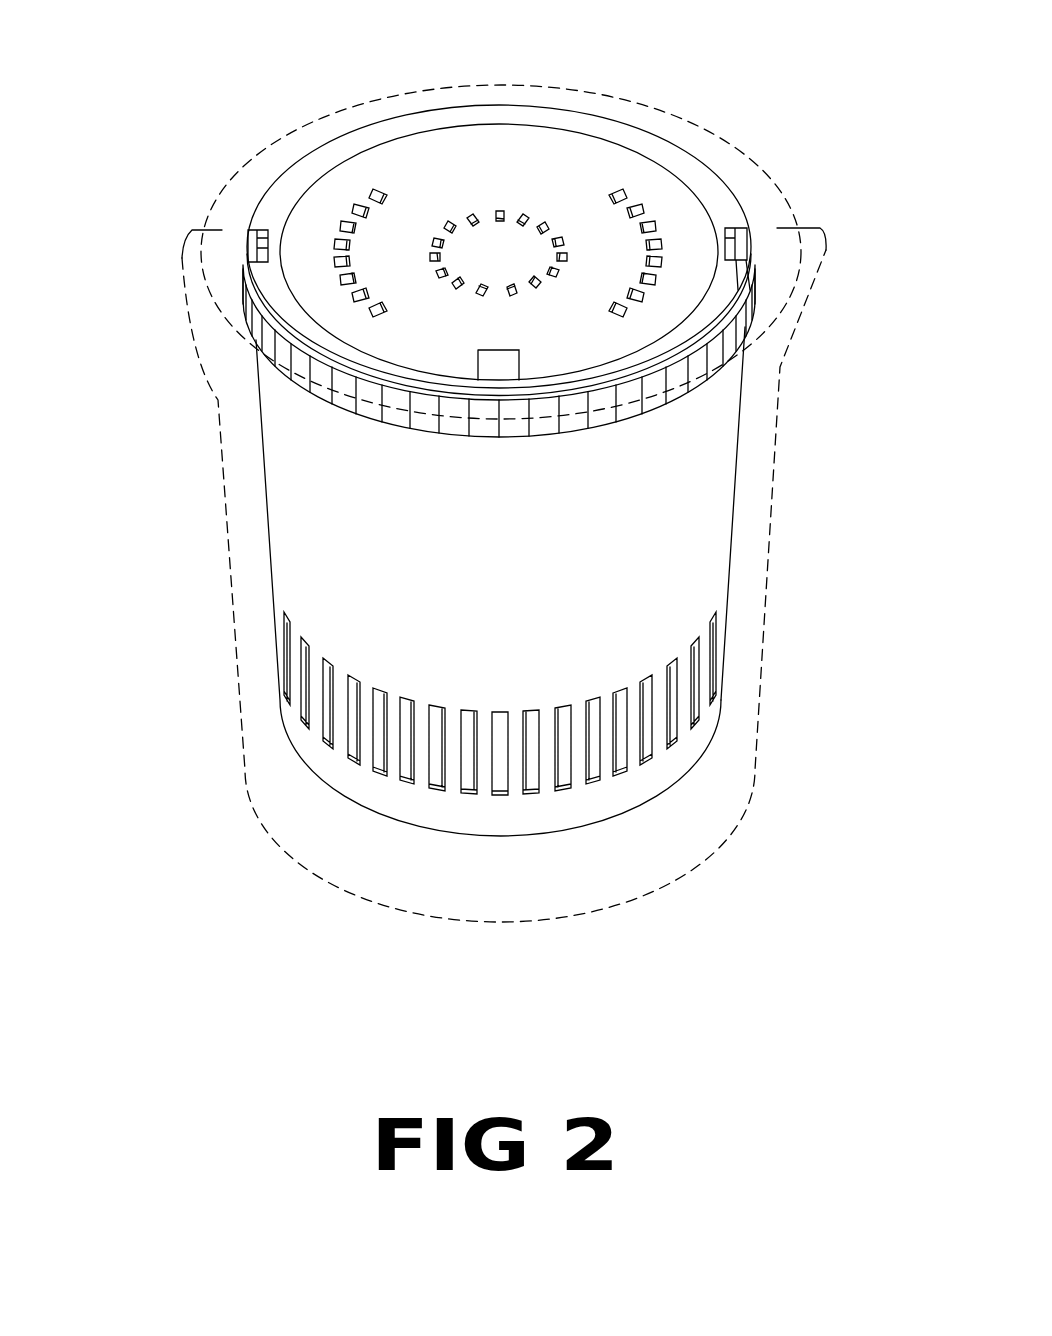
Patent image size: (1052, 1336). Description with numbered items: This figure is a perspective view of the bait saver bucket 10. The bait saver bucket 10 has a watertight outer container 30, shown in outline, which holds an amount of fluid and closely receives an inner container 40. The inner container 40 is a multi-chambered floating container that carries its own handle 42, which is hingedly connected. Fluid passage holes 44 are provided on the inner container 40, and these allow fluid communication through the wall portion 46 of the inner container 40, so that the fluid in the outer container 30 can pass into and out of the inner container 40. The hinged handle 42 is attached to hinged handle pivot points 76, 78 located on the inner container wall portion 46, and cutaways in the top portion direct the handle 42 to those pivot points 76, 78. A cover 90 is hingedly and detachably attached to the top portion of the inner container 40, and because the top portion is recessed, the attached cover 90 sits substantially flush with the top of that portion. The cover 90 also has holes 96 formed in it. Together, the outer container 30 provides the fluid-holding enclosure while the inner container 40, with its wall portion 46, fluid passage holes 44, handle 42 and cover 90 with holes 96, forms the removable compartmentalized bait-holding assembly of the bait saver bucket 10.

The bait saver bucket 10 is at (170, 115).
The outer container 30 is at (238, 633).
The inner container 40 is at (267, 442).
The handle 42 is at (730, 288).
The fluid passage holes 44 is at (382, 745).
The wall portion 46 is at (733, 504).
The hinged handle pivot point 76 is at (730, 222).
The hinged handle pivot point 78 is at (272, 240).
The cover 90 is at (513, 160).
The holes 96 is at (523, 220).